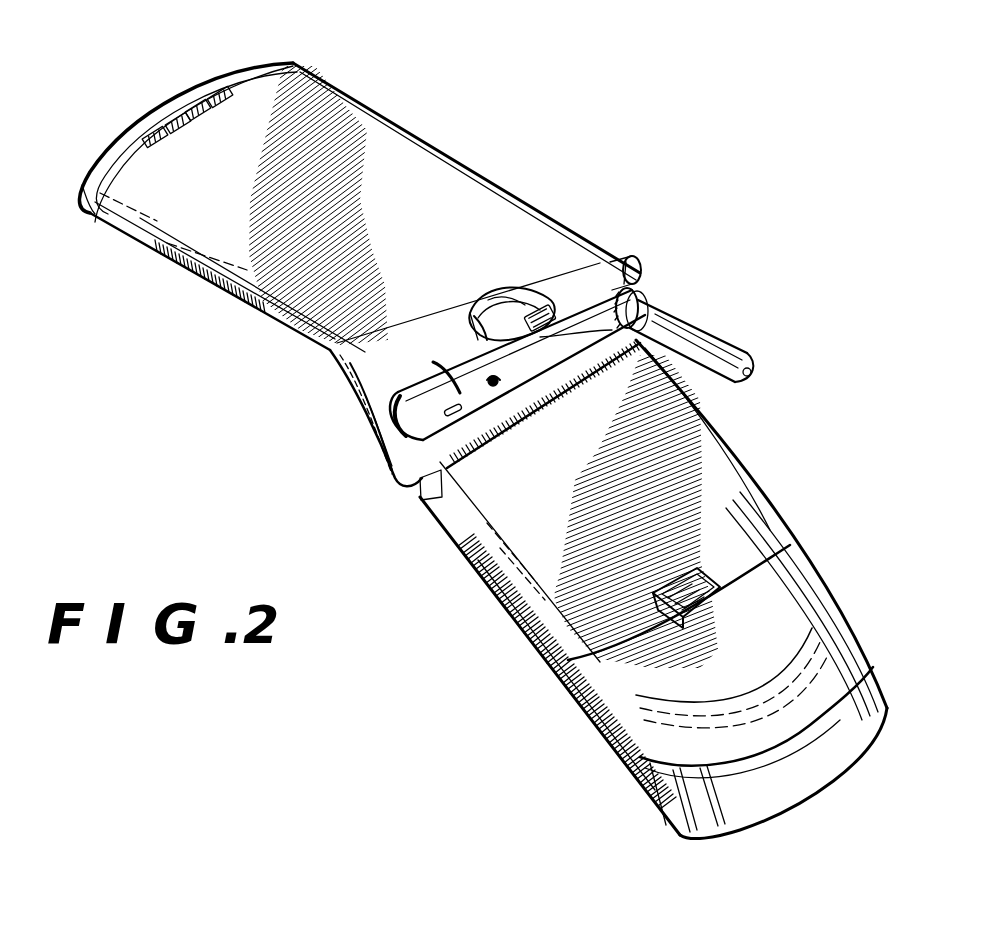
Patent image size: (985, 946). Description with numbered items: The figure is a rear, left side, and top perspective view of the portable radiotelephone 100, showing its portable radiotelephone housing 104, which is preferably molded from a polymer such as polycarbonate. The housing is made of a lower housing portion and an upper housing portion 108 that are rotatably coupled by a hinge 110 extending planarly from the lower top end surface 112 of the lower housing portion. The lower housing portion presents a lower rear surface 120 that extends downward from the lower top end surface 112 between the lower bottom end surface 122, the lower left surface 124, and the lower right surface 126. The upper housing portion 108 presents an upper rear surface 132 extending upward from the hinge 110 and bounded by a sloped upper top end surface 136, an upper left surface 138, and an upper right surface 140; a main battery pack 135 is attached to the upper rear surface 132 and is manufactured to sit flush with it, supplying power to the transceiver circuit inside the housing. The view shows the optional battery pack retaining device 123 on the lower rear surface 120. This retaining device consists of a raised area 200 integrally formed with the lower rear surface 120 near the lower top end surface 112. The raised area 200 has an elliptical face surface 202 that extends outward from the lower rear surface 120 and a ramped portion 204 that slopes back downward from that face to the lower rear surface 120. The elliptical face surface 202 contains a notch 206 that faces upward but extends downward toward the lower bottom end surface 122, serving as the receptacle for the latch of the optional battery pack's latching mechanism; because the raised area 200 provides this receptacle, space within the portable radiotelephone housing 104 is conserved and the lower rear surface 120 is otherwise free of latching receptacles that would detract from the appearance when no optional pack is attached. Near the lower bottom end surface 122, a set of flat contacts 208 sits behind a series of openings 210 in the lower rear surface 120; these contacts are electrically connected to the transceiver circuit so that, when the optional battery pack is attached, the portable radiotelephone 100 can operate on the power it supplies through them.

The portable radiotelephone 100 is at (814, 445).
The portable radiotelephone housing 104 is at (622, 265).
The upper housing portion 108 is at (688, 835).
The hinge 110 is at (637, 345).
The lower top end surface 112 is at (430, 478).
The lower rear surface 120 is at (455, 180).
The lower bottom end surface 122 is at (96, 167).
The optional battery pack retaining device 123 is at (542, 262).
The lower left surface 124 is at (157, 270).
The lower right surface 126 is at (330, 84).
The upper rear surface 132 is at (685, 683).
The main battery pack 135 is at (757, 530).
The sloped upper top end surface 136 is at (847, 737).
The upper left surface 138 is at (578, 693).
The upper right surface 140 is at (837, 607).
The raised area 200 is at (450, 300).
The elliptical face surface 202 is at (518, 332).
The ramped portion 204 is at (493, 300).
The notch 206 is at (637, 322).
The set of flat contacts 208 is at (150, 125).
The series of openings 210 is at (125, 206).